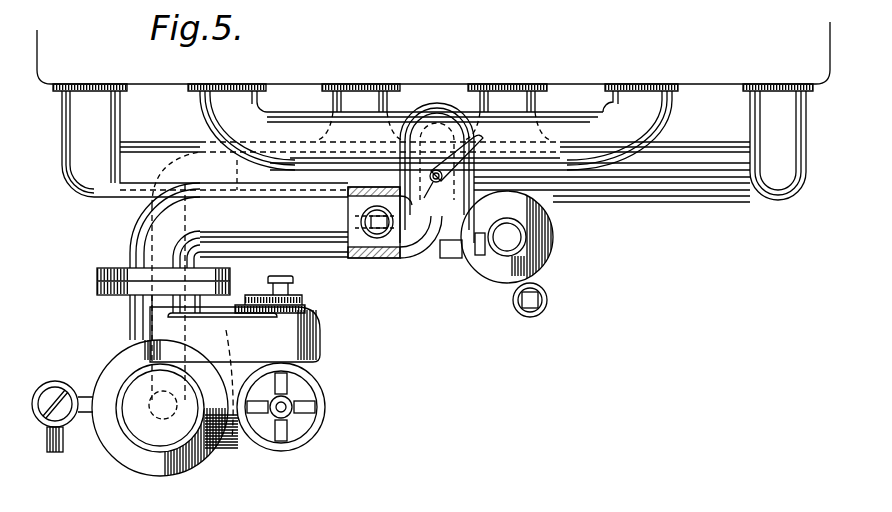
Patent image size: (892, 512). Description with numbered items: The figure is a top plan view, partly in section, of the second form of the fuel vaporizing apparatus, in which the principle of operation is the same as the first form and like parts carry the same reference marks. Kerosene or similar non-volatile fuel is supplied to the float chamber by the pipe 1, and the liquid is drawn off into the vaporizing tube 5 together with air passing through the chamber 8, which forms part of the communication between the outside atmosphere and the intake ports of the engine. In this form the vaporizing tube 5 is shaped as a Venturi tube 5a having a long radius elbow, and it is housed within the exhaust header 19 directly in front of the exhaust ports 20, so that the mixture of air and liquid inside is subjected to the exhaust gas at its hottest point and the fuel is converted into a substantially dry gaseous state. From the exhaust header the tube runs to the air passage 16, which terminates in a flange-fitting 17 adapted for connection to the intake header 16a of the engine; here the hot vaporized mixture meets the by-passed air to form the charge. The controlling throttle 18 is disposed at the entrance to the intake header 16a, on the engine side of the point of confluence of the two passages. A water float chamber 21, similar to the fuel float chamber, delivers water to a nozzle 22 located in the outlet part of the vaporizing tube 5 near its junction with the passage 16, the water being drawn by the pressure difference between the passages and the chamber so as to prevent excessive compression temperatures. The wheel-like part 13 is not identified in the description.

The pipe 1 is at (63, 442).
The vaporizing tube 5 is at (150, 200).
The Venturi tube 5a is at (584, 178).
The chamber 8 is at (230, 432).
The wheel 13 is at (292, 425).
The passage 16 is at (360, 250).
The intake header 16a is at (652, 116).
The flange-fitting 17 is at (100, 278).
The throttle 18 is at (416, 252).
The exhaust header 19 is at (732, 204).
The exhaust ports 20 is at (118, 106).
The float chamber 21 is at (550, 262).
The nozzle 22 is at (380, 235).